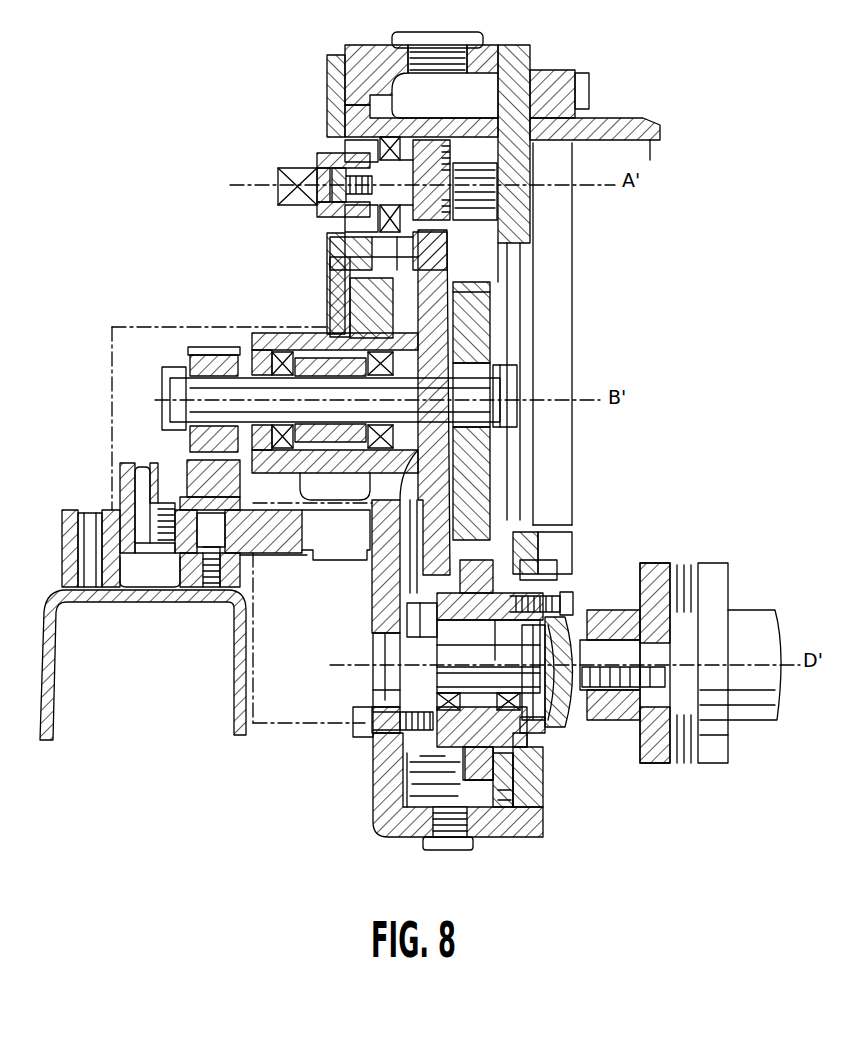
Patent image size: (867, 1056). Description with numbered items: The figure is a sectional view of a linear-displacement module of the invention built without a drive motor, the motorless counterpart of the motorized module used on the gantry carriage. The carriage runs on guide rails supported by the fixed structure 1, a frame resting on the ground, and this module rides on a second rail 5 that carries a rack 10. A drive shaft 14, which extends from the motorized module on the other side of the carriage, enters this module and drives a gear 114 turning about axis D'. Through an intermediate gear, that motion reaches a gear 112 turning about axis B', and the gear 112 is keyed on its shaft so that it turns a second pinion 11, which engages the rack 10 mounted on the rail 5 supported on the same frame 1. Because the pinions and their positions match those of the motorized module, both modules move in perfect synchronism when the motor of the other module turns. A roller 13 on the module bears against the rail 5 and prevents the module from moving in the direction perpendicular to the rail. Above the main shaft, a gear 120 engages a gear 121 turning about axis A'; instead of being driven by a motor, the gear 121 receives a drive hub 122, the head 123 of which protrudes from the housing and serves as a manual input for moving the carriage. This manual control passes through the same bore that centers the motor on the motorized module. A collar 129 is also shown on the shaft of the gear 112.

The fixed structure 1 is at (65, 575).
The guide rail 5 is at (110, 527).
The rack 10 is at (190, 468).
The gear 11 is at (192, 362).
The roller 13 is at (308, 540).
The drive shaft 14 is at (762, 712).
The gear 112 is at (490, 482).
The gear 114 is at (508, 773).
The gear 120 is at (455, 530).
The gear 121 is at (445, 220).
The drive hub 122 is at (325, 158).
The head 123 is at (290, 207).
The collar 129 is at (495, 432).